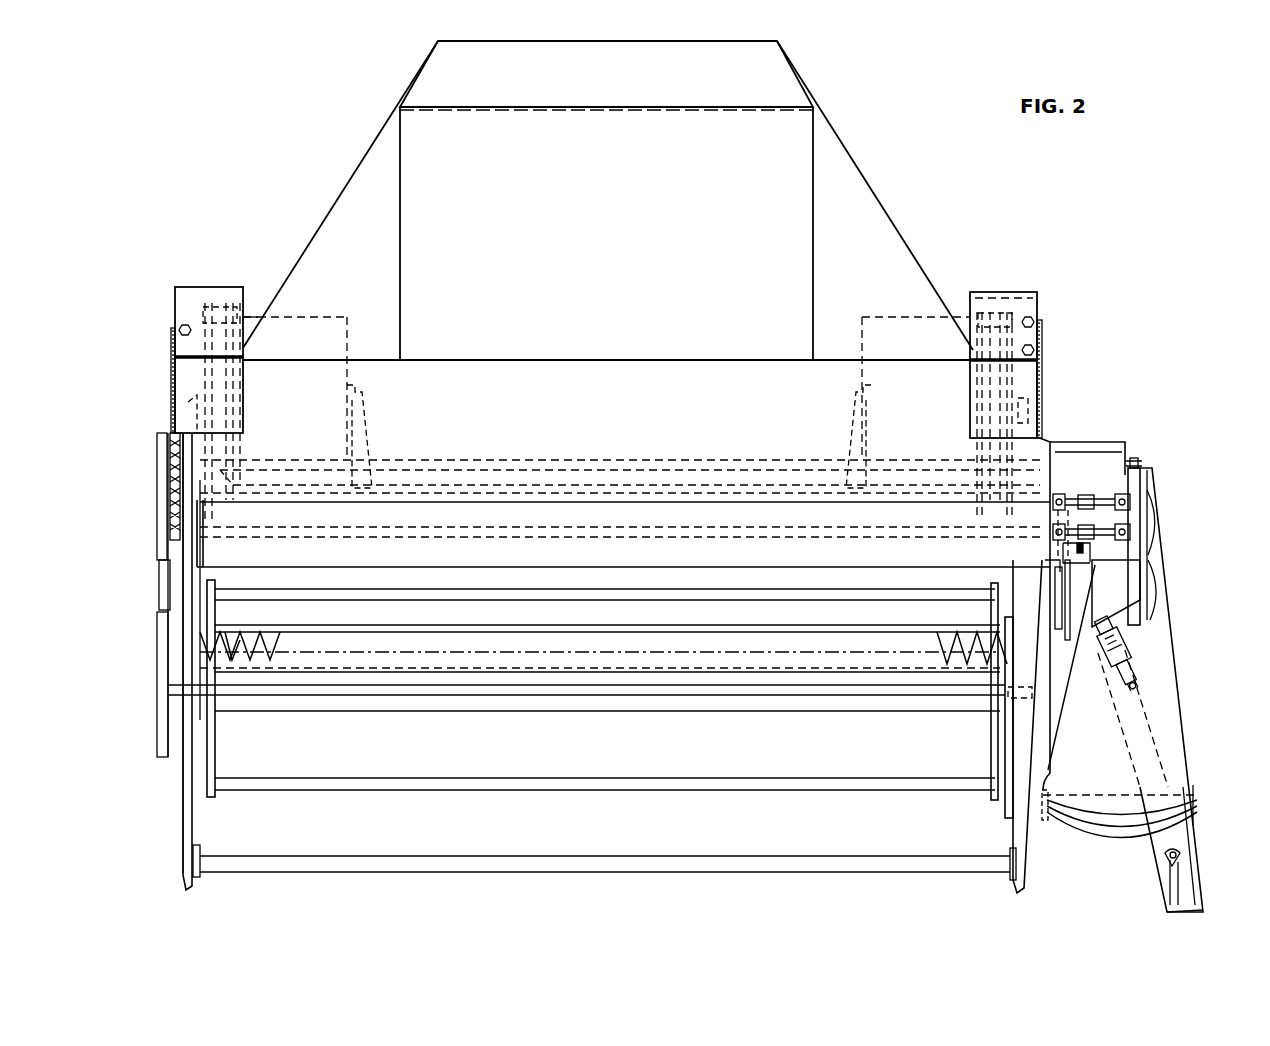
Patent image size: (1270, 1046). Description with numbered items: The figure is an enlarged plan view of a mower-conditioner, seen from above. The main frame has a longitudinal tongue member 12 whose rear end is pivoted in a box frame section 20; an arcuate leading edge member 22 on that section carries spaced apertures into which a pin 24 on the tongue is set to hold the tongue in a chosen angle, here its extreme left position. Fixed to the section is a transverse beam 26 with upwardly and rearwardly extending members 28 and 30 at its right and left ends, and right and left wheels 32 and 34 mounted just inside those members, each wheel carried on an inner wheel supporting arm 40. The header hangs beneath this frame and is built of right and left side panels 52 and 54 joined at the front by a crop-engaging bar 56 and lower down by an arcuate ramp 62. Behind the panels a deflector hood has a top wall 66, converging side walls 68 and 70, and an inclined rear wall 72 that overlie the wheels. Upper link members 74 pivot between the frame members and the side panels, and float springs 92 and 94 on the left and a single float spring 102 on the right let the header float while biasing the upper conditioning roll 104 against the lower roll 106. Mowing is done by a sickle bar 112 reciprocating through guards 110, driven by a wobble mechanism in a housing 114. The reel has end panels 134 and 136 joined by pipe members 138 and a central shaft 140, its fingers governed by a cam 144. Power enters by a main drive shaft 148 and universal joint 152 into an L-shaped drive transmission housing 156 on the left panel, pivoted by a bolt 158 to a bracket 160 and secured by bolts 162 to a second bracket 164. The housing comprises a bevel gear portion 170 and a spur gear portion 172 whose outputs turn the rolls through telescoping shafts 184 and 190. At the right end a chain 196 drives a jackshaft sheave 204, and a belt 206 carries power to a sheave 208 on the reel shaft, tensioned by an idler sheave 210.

The tongue member 12 is at (1190, 872).
The box frame section 20 is at (1183, 722).
The arcuate leading edge member 22 is at (1095, 830).
The pin 24 is at (1165, 855).
The transverse beam 26 is at (650, 538).
The right upwardly and rearwardly extending member 28 is at (213, 320).
The left upwardly and rearwardly extending member 30 is at (1012, 330).
The right wheel 32 is at (253, 317).
The left wheel 34 is at (972, 322).
The inner wheel supporting arm 40 is at (370, 437).
The right side panel 52 is at (183, 812).
The left side panel 54 is at (1020, 828).
The transverse crop-engaging bar 56 is at (640, 860).
The transverse arcuate ramp 62 is at (381, 620).
The top wall 66 is at (594, 215).
The right side wall 68 is at (352, 178).
The left side wall 70 is at (860, 172).
The rear wall 72 is at (596, 81).
The upper link members 74 is at (185, 375).
The front float spring 92 is at (1040, 365).
The rear float spring 94 is at (1040, 335).
The float spring 102 is at (172, 340).
The upper crop conditioning roll 104 is at (462, 556).
The lower crop conditioning roll 106 is at (540, 540).
The guards 110 is at (265, 660).
The sickle bar 112 is at (225, 665).
The housing 114 is at (1060, 630).
The right reel end panel 134 is at (215, 757).
The left reel end panel 136 is at (992, 757).
The transverse pipe members 138 is at (628, 597).
The central shaft 140 is at (205, 745).
The cam 144 is at (1005, 805).
The main longitudinal drive shaft 148 is at (1132, 688).
The universal joint 152 is at (1146, 651).
The drive transmission housing 156 is at (1181, 565).
The bolt 158 is at (1142, 462).
The bracket 160 is at (1063, 445).
The bolts 162 is at (1085, 555).
The second bracket 164 is at (1050, 565).
The bevel gear portion 170 is at (1115, 617).
The spur gear portion 172 is at (1140, 510).
The telescoping shaft 184 is at (1095, 535).
The second telescoping shaft 190 is at (1080, 500).
The chain 196 is at (170, 513).
The sheave 204 is at (157, 464).
The belt 206 is at (165, 540).
The sheave 208 is at (157, 658).
The idler sheave 210 is at (158, 580).